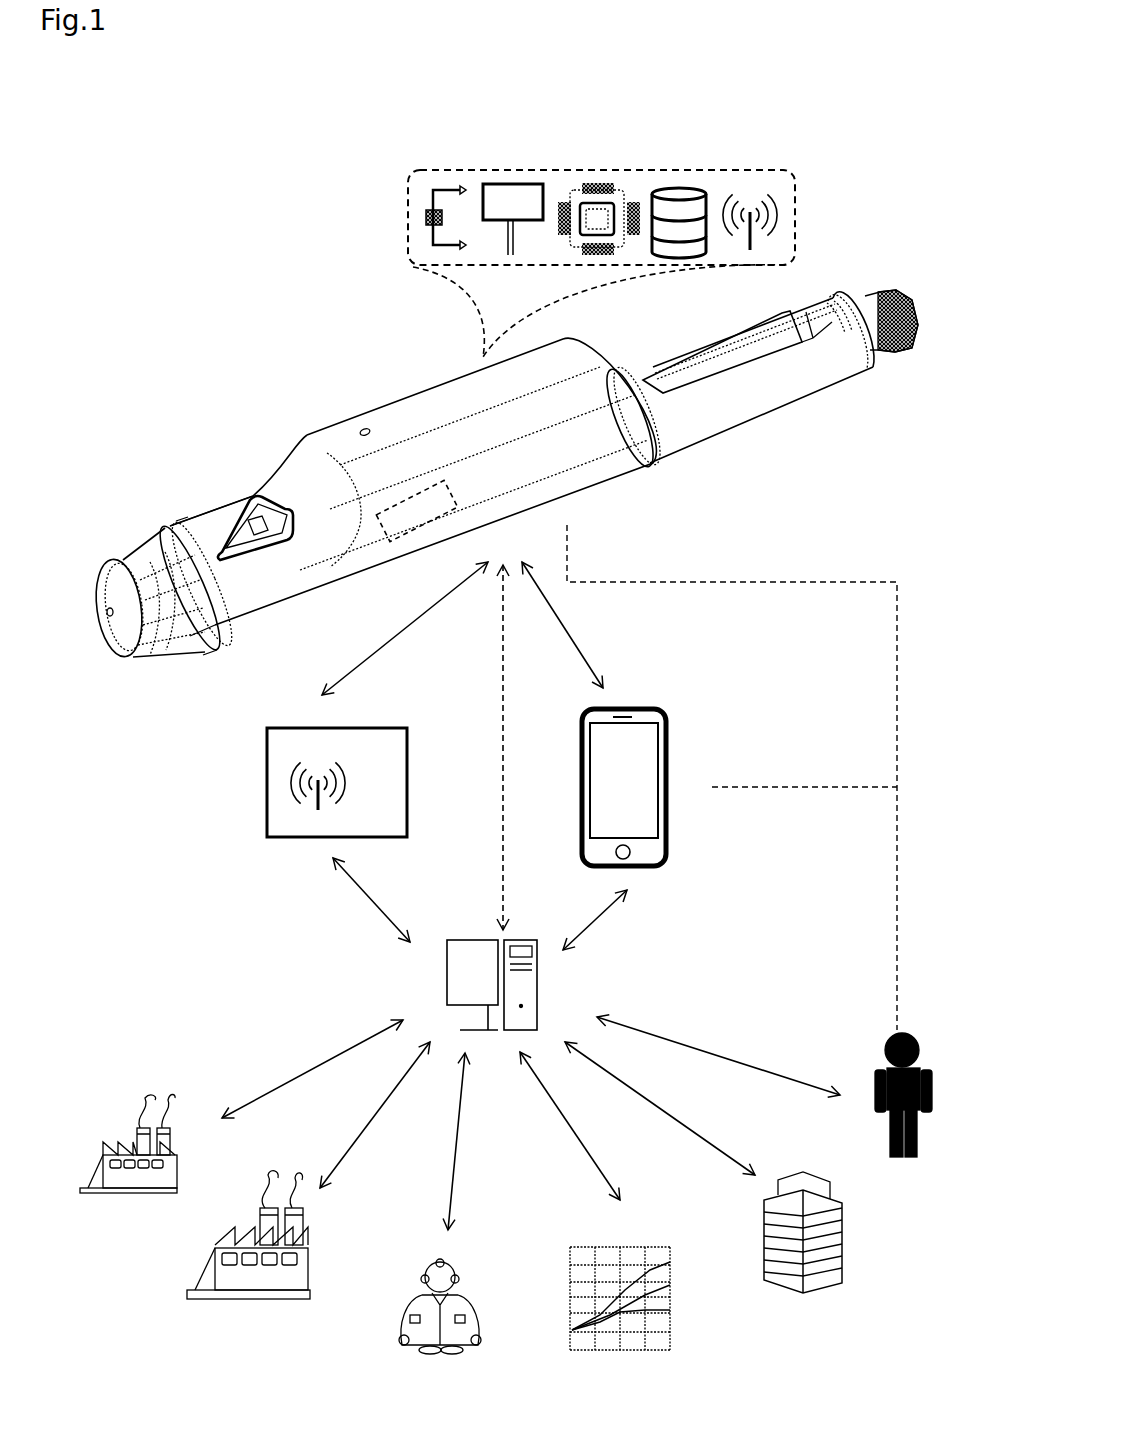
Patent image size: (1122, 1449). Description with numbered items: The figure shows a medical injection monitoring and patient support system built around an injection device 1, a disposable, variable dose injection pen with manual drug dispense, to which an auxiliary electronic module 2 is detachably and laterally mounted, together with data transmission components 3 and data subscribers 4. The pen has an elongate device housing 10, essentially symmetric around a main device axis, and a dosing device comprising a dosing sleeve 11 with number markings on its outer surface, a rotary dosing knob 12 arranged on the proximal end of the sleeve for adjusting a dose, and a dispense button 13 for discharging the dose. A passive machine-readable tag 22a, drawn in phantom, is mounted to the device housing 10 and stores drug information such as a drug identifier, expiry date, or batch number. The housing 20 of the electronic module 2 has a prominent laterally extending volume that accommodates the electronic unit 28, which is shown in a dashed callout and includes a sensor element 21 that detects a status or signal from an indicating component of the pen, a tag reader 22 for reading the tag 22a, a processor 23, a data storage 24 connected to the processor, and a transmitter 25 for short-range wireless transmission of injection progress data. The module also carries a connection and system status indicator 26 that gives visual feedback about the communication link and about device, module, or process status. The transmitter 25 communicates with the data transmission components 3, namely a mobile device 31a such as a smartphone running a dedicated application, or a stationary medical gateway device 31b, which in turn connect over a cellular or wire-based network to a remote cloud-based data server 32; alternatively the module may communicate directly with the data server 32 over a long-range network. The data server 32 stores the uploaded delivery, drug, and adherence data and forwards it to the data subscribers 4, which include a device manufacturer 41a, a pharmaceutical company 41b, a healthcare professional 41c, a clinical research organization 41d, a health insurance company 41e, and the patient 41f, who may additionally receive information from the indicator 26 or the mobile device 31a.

The injection device 1 is at (693, 490).
The auxiliary electronic module 2 is at (283, 417).
The data transmission components 3 is at (147, 805).
The data subscribers 4 is at (145, 1018).
The device housing 10 is at (777, 408).
The dosing sleeve 11 is at (227, 543).
The rotary dosing knob 12 is at (147, 540).
The dispense button 13 is at (92, 567).
The housing of the electronic module 20 is at (363, 412).
The sensor element 21 is at (444, 160).
The tag reader 22 is at (522, 160).
The passive machine-readable tag 22a is at (416, 510).
The processor 23 is at (602, 160).
The data storage 24 is at (684, 160).
The transmitter 25 is at (762, 160).
The connection and system status indicator 26 is at (227, 510).
The electronic unit 28 is at (400, 193).
The mobile device 31a is at (683, 836).
The stationary medical gateway device 31b is at (288, 848).
The data server 32 is at (560, 975).
The device manufacturer 41a is at (115, 1174).
The pharmaceutical company 41b is at (246, 1261).
The healthcare professional 41c is at (407, 1313).
The clinical research organization 41d is at (662, 1306).
The health insurance company 41e is at (842, 1233).
The patient 41f is at (918, 1117).